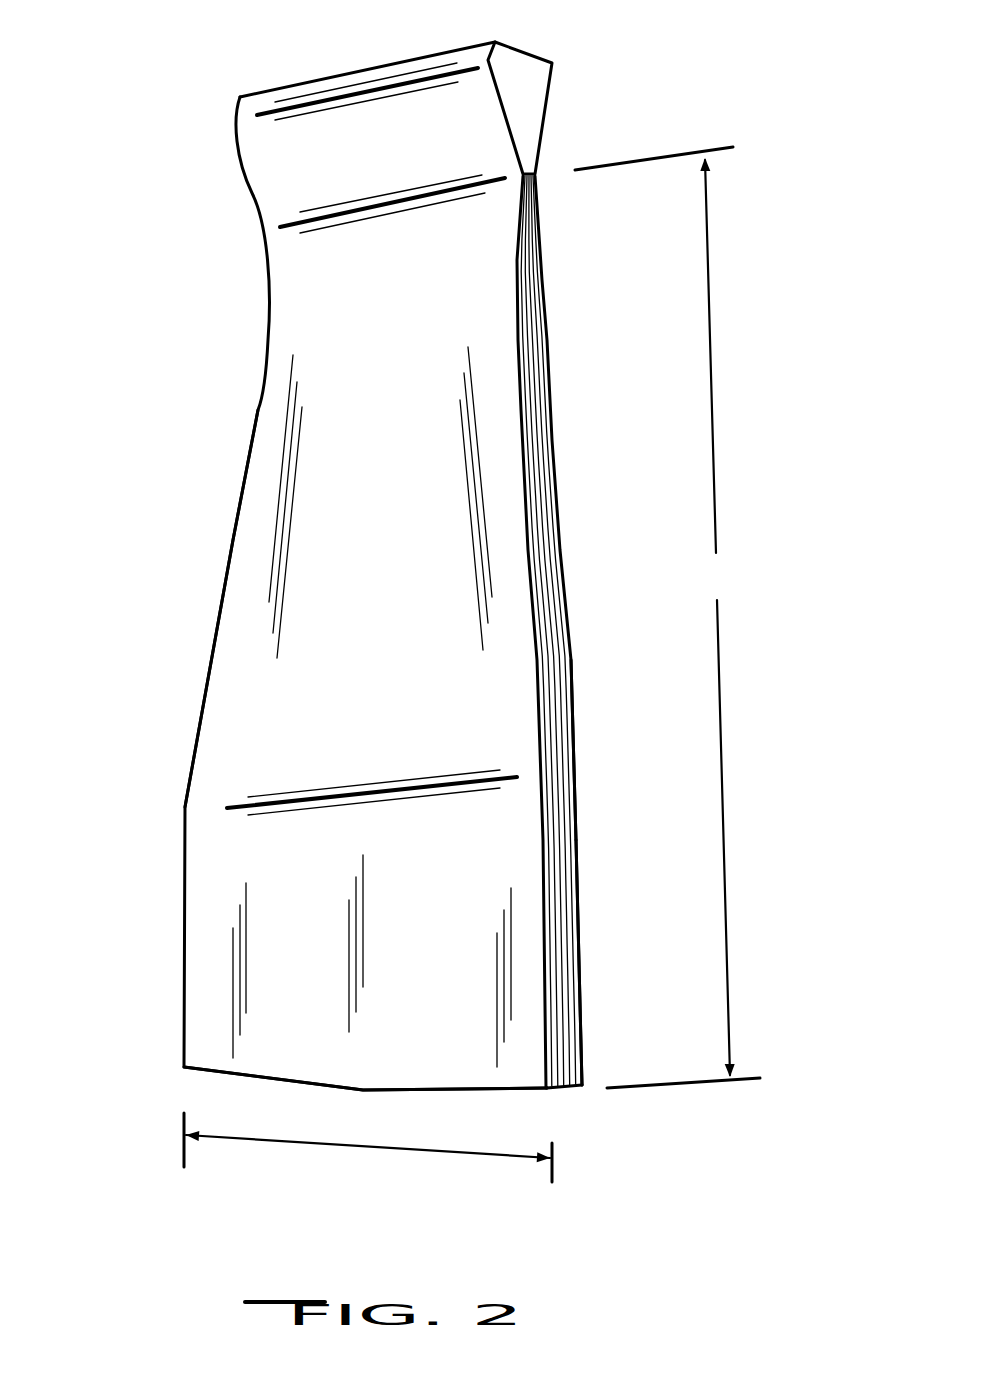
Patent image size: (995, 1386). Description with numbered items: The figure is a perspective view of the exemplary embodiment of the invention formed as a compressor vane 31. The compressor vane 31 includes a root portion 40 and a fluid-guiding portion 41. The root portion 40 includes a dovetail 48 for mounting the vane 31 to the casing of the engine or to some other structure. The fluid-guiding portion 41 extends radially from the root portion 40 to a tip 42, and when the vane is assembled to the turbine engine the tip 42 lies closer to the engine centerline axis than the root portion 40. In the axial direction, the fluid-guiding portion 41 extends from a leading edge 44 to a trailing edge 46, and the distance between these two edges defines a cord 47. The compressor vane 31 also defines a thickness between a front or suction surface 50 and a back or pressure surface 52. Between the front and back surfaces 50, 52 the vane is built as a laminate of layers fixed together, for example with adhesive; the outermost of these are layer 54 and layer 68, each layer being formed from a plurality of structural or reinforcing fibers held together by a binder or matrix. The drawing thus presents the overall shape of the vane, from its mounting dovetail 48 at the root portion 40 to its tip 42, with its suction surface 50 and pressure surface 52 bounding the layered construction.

The compressor vane 31 is at (152, 122).
The root portion 40 is at (265, 68).
The dovetail 48 is at (527, 88).
The back or pressure surface 52 is at (555, 478).
The fluid-guiding portion 41 is at (667, 617).
The leading edge 44 is at (192, 573).
The trailing edge 46 is at (580, 657).
The front or suction surface 50 is at (330, 662).
The layer 54 is at (240, 867).
The layer 68 is at (573, 902).
The tip 42 is at (548, 1112).
The cord 47 is at (280, 1143).